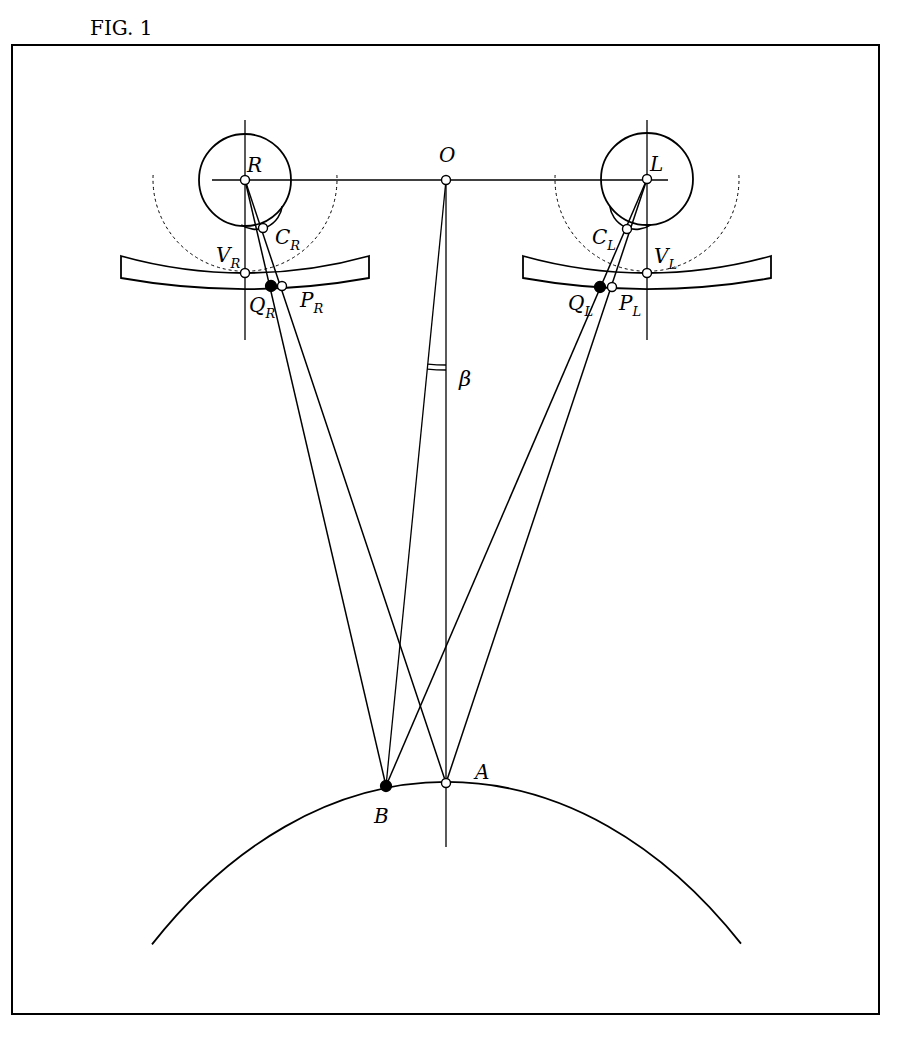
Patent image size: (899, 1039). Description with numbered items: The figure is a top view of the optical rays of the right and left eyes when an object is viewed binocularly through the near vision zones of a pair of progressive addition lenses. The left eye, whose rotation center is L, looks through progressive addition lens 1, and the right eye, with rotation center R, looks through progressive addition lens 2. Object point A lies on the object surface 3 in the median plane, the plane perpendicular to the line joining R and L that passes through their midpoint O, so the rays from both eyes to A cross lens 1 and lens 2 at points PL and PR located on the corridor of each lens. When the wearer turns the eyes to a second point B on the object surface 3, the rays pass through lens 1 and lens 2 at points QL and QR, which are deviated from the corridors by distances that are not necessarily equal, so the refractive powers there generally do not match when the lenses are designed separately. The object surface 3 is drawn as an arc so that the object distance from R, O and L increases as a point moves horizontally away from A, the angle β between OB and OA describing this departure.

The progressive addition lens for left eye 1 is at (713, 285).
The progressive addition lens for right eye 2 is at (169, 285).
The object surface 3 is at (542, 796).